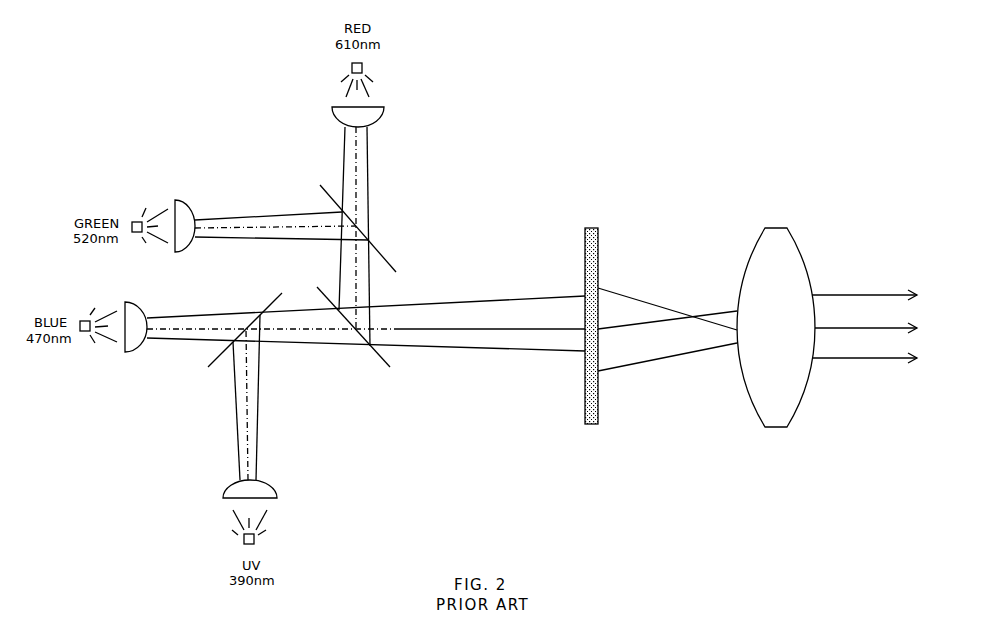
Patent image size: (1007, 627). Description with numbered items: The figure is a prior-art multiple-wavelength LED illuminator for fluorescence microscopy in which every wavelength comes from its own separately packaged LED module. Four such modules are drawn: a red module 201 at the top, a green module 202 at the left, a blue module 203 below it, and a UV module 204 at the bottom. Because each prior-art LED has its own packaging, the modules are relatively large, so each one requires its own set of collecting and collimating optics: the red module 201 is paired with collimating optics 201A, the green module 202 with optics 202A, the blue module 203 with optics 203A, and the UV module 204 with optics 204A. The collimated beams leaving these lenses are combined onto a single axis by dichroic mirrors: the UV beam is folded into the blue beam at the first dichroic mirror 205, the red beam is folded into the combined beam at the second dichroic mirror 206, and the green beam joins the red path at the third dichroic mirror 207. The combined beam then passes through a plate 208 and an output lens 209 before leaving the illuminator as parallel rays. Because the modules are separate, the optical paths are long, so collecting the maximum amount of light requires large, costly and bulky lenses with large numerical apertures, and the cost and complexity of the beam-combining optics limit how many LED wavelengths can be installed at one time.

The LED module 201 is at (340, 79).
The collecting and collimating optics 201A is at (337, 116).
The LED module 202 is at (147, 214).
The collecting and collimating optics 202A is at (190, 213).
The LED module 203 is at (97, 339).
The collecting and collimating optics 203A is at (137, 341).
The LED module 204 is at (231, 528).
The collecting and collimating optics 204A is at (227, 490).
The dichroic mirror 205 is at (245, 323).
The dichroic mirror 206 is at (347, 316).
The dichroic mirror 207 is at (365, 228).
The diffuser plate 208 is at (592, 344).
The output lens 209 is at (776, 344).